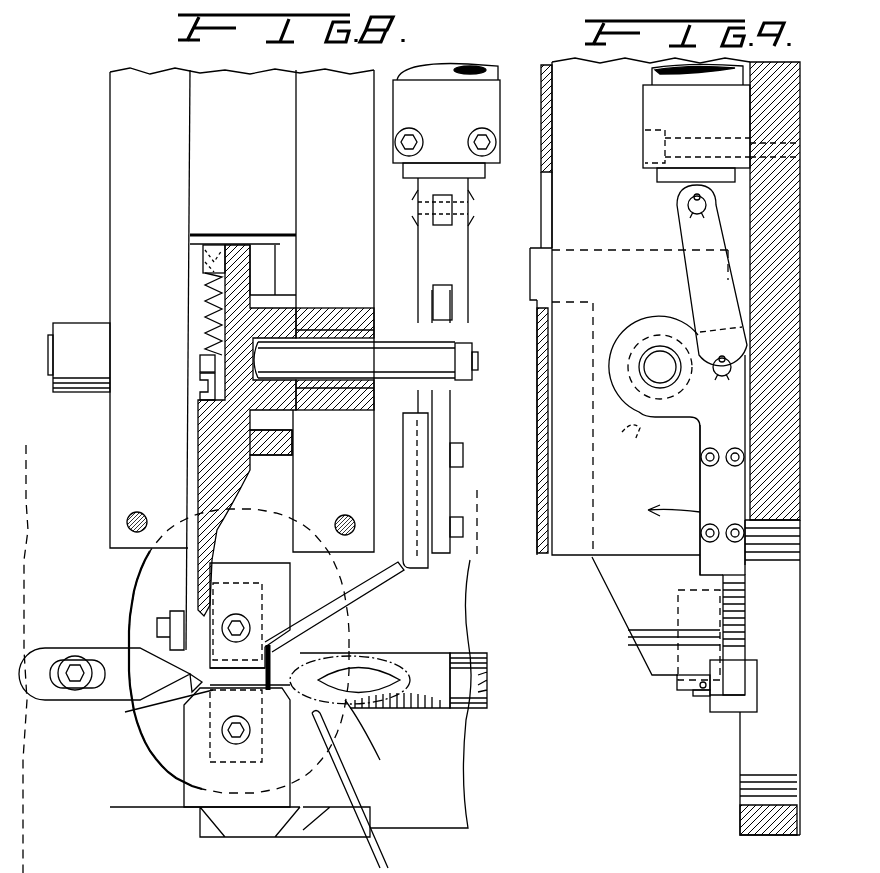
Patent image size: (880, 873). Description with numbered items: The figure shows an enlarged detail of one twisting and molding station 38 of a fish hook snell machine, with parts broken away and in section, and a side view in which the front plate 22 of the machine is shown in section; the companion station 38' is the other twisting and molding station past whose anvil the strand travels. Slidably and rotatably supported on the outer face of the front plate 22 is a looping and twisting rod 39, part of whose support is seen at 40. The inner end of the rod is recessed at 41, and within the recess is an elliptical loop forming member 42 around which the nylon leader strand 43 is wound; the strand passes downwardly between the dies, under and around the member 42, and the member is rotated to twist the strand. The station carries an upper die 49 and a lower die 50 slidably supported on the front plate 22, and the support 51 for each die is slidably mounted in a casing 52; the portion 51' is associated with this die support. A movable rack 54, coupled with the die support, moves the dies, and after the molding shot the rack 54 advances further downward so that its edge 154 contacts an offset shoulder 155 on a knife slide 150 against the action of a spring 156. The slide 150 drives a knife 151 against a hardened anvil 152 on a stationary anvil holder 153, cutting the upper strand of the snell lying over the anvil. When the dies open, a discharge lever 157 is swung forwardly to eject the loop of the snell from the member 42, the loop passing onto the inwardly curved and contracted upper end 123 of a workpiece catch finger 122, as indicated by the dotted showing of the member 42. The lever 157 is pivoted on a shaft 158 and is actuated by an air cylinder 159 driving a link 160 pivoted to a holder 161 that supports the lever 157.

In FIG. 8, the rack 54 is at (262, 140).
In FIG. 8, the twisting and molding station 38 is at (66, 598).
In FIG. 9, the twisting and molding station 38 is at (687, 467).
In FIG. 8, the twisting and molding station 38' is at (78, 860).
In FIG. 8, the edge 154 is at (215, 360).
In FIG. 8, the spring 156 is at (205, 295).
In FIG. 8, the knife slide 150 is at (200, 363).
In FIG. 8, the offset shoulder 155 is at (200, 385).
In FIG. 8, the shaft 158 is at (312, 352).
In FIG. 9, the shaft 158 is at (655, 365).
In FIG. 8, the air cylinder 159 is at (462, 68).
In FIG. 9, the air cylinder 159 is at (712, 78).
In FIG. 8, the link 160 is at (455, 256).
In FIG. 9, the link 160 is at (680, 226).
In FIG. 8, the holder 161 is at (445, 428).
In FIG. 9, the holder 161 is at (710, 437).
In FIG. 8, the lobe 51' is at (300, 440).
In FIG. 9, the lobe 51' is at (620, 449).
In FIG. 8, the support 51 is at (233, 639).
In FIG. 9, the support 51 is at (640, 618).
In FIG. 8, the upper die 49 is at (268, 615).
In FIG. 8, the lower die 50 is at (190, 708).
In FIG. 8, the discharge lever 157 is at (382, 592).
In FIG. 9, the discharge lever 157 is at (740, 603).
In FIG. 8, the anvil holder 153 is at (125, 655).
In FIG. 9, the anvil holder 153 is at (728, 700).
In FIG. 8, the knife 151 is at (150, 650).
In FIG. 9, the knife 151 is at (680, 860).
In FIG. 8, the anvil 152 is at (200, 698).
In FIG. 9, the anvil 152 is at (698, 692).
In FIG. 8, the loop forming member 42 is at (358, 670).
In FIG. 8, the recess 41 is at (440, 655).
In FIG. 8, the looping and twisting rod 39 is at (487, 708).
In FIG. 8, the curved upper end 123 is at (345, 715).
In FIG. 8, the workpiece catch finger 122 is at (385, 852).
In FIG. 8, the front plate 22 is at (455, 765).
In FIG. 9, the front plate 22 is at (795, 390).
In FIG. 9, the casing 52 is at (572, 545).
In FIG. 9, the leader strand 43 is at (703, 690).
In FIG. 9, the support 40 is at (742, 862).